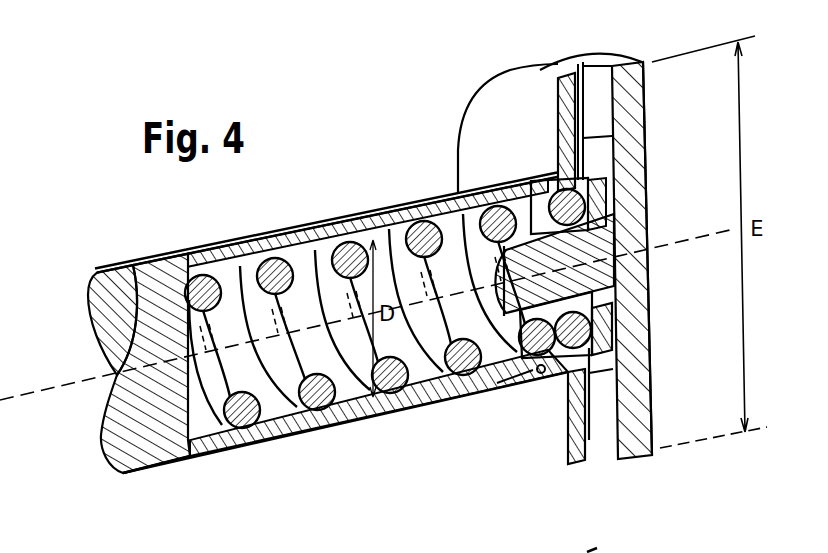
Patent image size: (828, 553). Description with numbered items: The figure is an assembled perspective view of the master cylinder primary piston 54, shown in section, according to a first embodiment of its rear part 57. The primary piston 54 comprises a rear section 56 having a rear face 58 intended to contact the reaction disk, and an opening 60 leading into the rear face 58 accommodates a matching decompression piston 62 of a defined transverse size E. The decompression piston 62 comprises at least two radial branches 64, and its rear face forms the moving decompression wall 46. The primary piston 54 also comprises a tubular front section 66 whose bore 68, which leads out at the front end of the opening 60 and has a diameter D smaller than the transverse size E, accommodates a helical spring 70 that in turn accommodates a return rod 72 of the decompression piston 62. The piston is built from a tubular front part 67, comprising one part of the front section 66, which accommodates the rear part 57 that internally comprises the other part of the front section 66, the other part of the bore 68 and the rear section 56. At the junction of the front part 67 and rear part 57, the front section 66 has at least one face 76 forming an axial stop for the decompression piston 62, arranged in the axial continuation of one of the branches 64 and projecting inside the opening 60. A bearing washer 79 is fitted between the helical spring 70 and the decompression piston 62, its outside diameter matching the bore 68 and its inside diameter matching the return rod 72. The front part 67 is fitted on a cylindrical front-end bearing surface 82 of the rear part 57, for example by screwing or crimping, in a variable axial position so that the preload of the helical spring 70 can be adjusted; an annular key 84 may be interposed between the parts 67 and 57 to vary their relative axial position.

The moving decompression wall 46 is at (646, 185).
The primary piston 54 is at (192, 234).
The rear section 56 is at (540, 68).
The rear part 57 is at (502, 125).
The rear face 58 is at (583, 58).
The opening 60 is at (573, 60).
The decompression piston 62 is at (647, 230).
The radial branches 64 is at (628, 74).
The tubular front section 66 is at (377, 215).
The tubular front part 67 is at (152, 430).
The bore 68 is at (292, 250).
The helical spring 70 is at (327, 406).
The return rod 72 is at (530, 368).
The stop face 76 is at (586, 160).
The bearing washer 79 is at (620, 335).
The cylindrical front-end bearing surface 82 is at (557, 179).
The annular key 84 is at (548, 174).